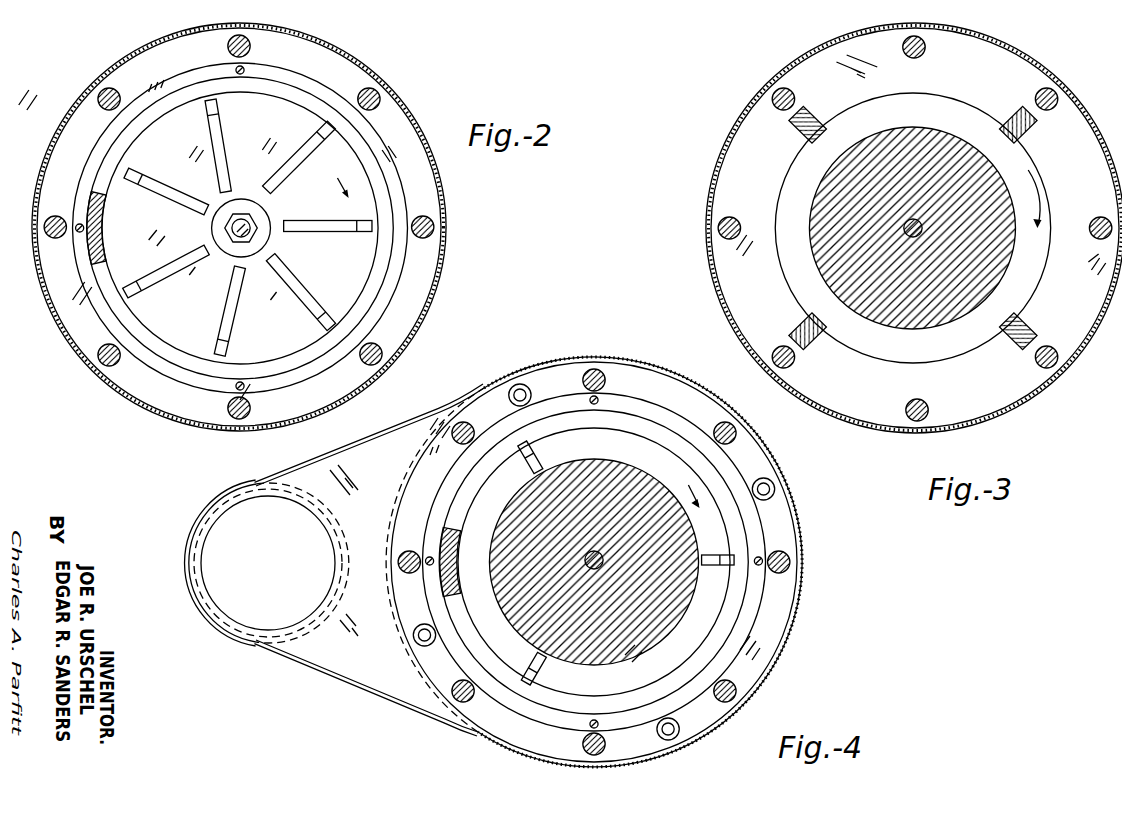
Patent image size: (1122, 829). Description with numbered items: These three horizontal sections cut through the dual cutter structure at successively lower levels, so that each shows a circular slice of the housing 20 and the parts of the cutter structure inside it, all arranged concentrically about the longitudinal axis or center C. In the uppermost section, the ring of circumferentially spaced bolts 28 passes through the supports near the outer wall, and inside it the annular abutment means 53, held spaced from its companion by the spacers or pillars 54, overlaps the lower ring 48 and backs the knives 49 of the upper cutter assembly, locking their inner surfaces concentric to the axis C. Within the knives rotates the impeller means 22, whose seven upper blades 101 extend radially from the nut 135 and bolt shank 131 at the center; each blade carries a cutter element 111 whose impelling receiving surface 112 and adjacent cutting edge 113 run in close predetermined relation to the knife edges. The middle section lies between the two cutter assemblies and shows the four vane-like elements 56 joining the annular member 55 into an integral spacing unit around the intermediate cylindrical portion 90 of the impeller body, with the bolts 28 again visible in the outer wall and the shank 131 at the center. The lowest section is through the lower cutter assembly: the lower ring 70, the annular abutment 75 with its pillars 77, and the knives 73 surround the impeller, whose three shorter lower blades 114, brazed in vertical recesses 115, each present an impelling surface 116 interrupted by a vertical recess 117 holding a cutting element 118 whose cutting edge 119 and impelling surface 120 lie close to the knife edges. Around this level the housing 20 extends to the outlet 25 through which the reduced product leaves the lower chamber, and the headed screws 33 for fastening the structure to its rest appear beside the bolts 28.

In FIG. 2, the housing 20 is at (360, 59).
In FIG. 3, the housing 20 is at (1042, 67).
In FIG. 4, the housing 20 is at (636, 358).
In FIG. 2, the impeller means 22 is at (240, 228).
In FIG. 3, the impeller means 22 is at (811, 215).
In FIG. 4, the impeller means 22 is at (614, 462).
In FIG. 4, the outlet 25 is at (204, 565).
In FIG. 2, the bolts 28 is at (253, 48).
In FIG. 3, the bolts 28 is at (793, 97).
In FIG. 4, the bolts 28 is at (606, 381).
In FIG. 4, the headed screws 33 is at (533, 394).
In FIG. 2, the lower ring 48 is at (106, 274).
In FIG. 2, the knives 49 is at (108, 226).
In FIG. 2, the annular abutment means 53 is at (105, 128).
In FIG. 2, the spacers or pillars 54 is at (247, 70).
In FIG. 3, the annular member 55 is at (720, 188).
In FIG. 3, the vane-like elements 56 is at (803, 128).
In FIG. 4, the lower ring 70 is at (459, 496).
In FIG. 4, the knives 73 is at (460, 554).
In FIG. 4, the annular abutment 75 is at (440, 514).
In FIG. 4, the spacers or pillars 77 is at (430, 556).
In FIG. 3, the intermediate cylindrical portion 90 is at (820, 262).
In FIG. 2, the upper blades or vanes 101 is at (172, 185).
In FIG. 2, the cutter element 111 is at (122, 178).
In FIG. 2, the impelling receiving surface 112 is at (353, 231).
In FIG. 2, the cutting edge 113 is at (366, 231).
In FIG. 4, the lower blades or vanes 114 is at (535, 474).
In FIG. 4, the vertical recesses 115 is at (704, 566).
In FIG. 4, the impelling surface 116 is at (540, 462).
In FIG. 4, the vertical recess 117 is at (526, 468).
In FIG. 4, the cutting element 118 is at (733, 554).
In FIG. 4, the cutting edge 119 is at (527, 442).
In FIG. 4, the impelling surface 120 is at (538, 452).
In FIG. 3, the shank 131 is at (923, 228).
In FIG. 4, the shank 131 is at (606, 560).
In FIG. 2, the nut 135 is at (251, 222).
In FIG. 2, the longitudinal axis or center C is at (259, 232).